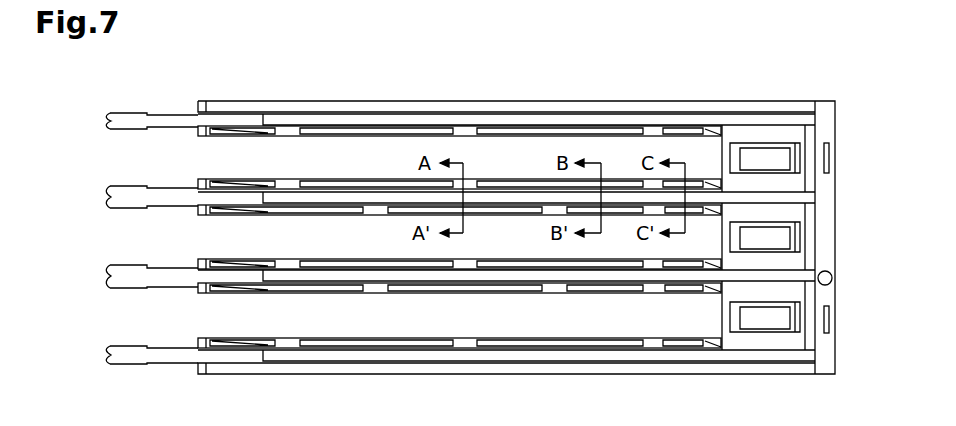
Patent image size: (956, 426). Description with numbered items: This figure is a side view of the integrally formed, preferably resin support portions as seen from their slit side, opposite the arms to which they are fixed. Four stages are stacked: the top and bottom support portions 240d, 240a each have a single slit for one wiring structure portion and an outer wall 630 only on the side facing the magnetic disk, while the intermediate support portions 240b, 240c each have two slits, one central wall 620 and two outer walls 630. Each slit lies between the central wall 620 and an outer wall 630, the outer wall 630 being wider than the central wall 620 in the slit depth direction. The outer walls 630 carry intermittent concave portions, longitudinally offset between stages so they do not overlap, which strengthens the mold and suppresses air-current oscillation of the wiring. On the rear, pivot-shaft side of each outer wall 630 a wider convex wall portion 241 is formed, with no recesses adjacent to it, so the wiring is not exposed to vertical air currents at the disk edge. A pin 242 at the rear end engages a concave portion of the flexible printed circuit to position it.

The support portion 240a is at (130, 351).
The support portion 240b is at (130, 272).
The support portion 240c is at (130, 197).
The support portion 240d is at (134, 120).
The outer wall 630 is at (373, 265).
The central wall 620 is at (402, 278).
The convex wall portion 241 is at (680, 293).
The pin 242 is at (832, 276).